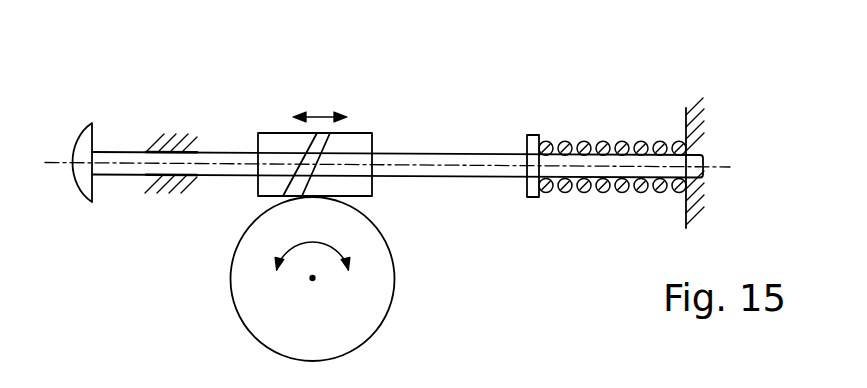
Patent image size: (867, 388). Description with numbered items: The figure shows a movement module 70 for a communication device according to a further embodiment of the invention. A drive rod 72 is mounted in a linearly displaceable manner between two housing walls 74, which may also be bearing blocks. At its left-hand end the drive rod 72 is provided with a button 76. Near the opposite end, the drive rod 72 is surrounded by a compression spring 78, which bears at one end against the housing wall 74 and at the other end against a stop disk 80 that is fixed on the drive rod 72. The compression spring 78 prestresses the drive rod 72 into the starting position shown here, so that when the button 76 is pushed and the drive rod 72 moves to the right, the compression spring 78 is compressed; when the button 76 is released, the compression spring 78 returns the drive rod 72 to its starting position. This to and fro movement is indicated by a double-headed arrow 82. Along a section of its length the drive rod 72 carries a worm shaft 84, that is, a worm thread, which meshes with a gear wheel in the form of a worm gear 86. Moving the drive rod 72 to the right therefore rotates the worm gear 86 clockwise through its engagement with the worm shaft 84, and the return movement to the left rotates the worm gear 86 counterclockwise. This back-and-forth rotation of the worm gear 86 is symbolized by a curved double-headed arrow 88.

The movement module 70 is at (458, 102).
The drive rod 72 is at (428, 157).
The housing walls 74 is at (182, 138).
The button 76 is at (86, 142).
The compression spring 78 is at (587, 141).
The stop disk 80 is at (532, 197).
The double-headed arrow 82 is at (320, 115).
The worm shaft 84 is at (357, 143).
The worm gear 86 is at (373, 308).
The curved double-headed arrow 88 is at (297, 243).